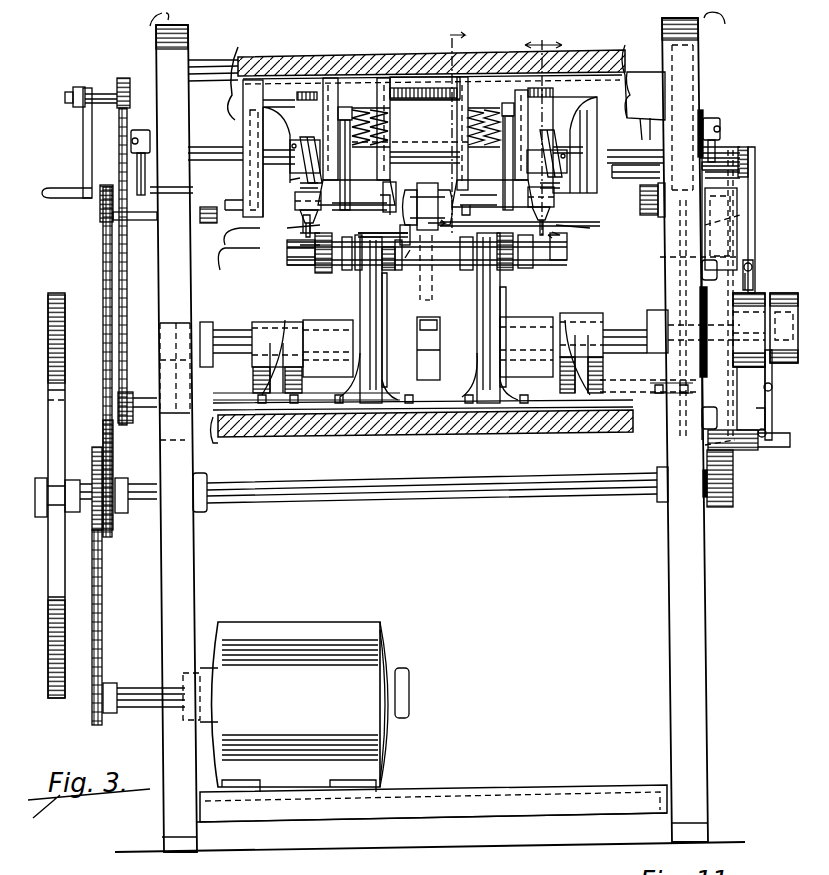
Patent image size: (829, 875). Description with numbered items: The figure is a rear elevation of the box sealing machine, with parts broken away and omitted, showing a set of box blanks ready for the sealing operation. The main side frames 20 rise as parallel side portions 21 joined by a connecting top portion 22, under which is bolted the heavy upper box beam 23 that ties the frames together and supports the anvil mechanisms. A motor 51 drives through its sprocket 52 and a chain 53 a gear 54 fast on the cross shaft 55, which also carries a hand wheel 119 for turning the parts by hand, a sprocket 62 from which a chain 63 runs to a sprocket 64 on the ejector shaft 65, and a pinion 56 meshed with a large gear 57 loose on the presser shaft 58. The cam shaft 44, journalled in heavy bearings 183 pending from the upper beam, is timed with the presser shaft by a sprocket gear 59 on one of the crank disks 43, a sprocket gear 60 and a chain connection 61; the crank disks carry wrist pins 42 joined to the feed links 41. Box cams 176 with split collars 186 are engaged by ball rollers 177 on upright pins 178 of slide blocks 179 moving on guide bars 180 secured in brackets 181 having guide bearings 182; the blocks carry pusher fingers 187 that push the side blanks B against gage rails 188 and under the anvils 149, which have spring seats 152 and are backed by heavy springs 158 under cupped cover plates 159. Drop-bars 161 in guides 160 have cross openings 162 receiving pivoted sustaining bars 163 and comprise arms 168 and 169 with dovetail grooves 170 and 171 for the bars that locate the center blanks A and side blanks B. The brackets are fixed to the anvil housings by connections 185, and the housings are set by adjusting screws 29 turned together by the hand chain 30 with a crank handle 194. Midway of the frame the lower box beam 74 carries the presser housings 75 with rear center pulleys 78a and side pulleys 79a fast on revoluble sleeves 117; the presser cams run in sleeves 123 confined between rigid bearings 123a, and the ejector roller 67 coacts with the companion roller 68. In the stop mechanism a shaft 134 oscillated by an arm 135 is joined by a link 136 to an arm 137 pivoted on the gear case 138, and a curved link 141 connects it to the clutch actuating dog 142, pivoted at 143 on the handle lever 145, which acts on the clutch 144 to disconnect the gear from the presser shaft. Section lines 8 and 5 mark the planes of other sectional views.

The main side frames 20 is at (205, 585).
The parallel side portions 21 is at (676, 559).
The connecting top portion 22 is at (429, 26).
The heavy channel or box beam 23 is at (226, 90).
The heavy bearings 183 is at (115, 92).
The hand operated chain 30 is at (122, 78).
The chain or belt 63 is at (103, 300).
The wrist pins 42 is at (131, 138).
The crank handle 194 is at (60, 188).
The links 41 is at (137, 168).
The sprocket 64 is at (100, 211).
The ejector shaft 65 is at (140, 218).
The adjusting screws 29 is at (400, 88).
The sprocket 62 is at (113, 528).
The gear 54 is at (95, 447).
The chain or belt 53 is at (102, 632).
The hand wheel 119 is at (48, 630).
The sprocket 52 is at (108, 715).
The cross shaft 55 is at (452, 487).
The motor 51 is at (304, 707).
The cam shaft 44 is at (213, 160).
The crank disks 43 is at (165, 190).
The guide bars 180 is at (225, 204).
The guide bearings 182 is at (595, 143).
The split collars 186 is at (420, 148).
The guides 160 is at (378, 27).
The box cams 176 is at (438, 152).
The anti-friction ball rollers 177 is at (285, 179).
The upright pins 178 is at (300, 187).
The slide blocks 179 is at (295, 210).
The arm 169 is at (436, 226).
The dovetail retaining groove 171 is at (240, 237).
The brackets 181 is at (630, 208).
The pusher fingers 187 is at (575, 250).
The connection 185 is at (306, 77).
The drop-bars 161 is at (343, 105).
The cross openings 162 is at (347, 105).
The sustaining bars 163 is at (503, 103).
The heavy springs 158 is at (470, 130).
The cupped cover plates 159 is at (460, 108).
The spring seats 152 is at (460, 146).
The ejector roller 67 is at (432, 183).
The dovetail retaining groove 170 is at (398, 188).
The arm 168 is at (395, 210).
The anvils 149 is at (448, 277).
The section line 8 is at (400, 290).
The section line 5 is at (545, 134).
The revoluble sleeves 117 is at (300, 268).
The center box blanks A is at (401, 261).
The side blanks B is at (318, 262).
The stop or gage rails 188 is at (410, 267).
The companion roller 68 is at (427, 292).
The center pulleys 78a is at (433, 318).
The side pulleys 79a is at (342, 275).
The presser housings 75 is at (428, 347).
The sleeves 123 is at (530, 440).
The rigid bearings 123a is at (280, 335).
The presser shaft 58 is at (230, 333).
The sprocket gear 60 is at (700, 315).
The chain connection 61 is at (700, 255).
The clutch 144 is at (720, 310).
The lower box beam 74 is at (430, 394).
The link 136 is at (755, 232).
The large gear 57 is at (737, 224).
The arm 135 is at (750, 148).
The sprocket gear 59 is at (703, 112).
The shaft 134 is at (722, 181).
The gear case 138 is at (737, 190).
The arm 137 is at (755, 273).
The curved link 141 is at (772, 371).
The clutch actuating dog 142 is at (773, 406).
The pivot 143 is at (773, 421).
The dog controlling handle lever 145 is at (756, 443).
The pinion 56 is at (733, 503).